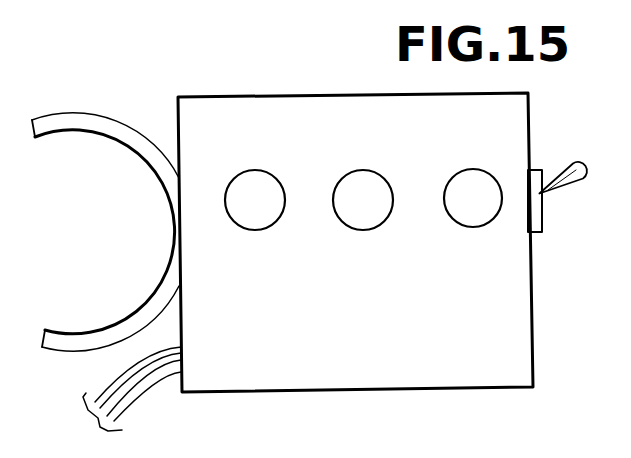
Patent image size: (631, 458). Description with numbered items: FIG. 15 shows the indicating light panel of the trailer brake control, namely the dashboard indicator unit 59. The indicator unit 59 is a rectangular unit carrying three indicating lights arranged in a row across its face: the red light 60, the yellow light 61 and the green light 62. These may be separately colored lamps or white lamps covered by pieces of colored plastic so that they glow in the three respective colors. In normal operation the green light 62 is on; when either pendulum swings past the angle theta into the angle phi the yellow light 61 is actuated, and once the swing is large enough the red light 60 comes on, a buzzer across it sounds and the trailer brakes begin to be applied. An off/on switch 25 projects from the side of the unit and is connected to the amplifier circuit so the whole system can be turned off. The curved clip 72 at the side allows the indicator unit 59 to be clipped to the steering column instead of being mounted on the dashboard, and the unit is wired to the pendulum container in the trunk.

The off/on switch 25 is at (574, 188).
The dashboard indicator unit 59 is at (533, 358).
The red indicating light 60 is at (476, 227).
The yellow indicating light 61 is at (363, 230).
The green indicating light 62 is at (255, 230).
The clip 72 is at (78, 346).